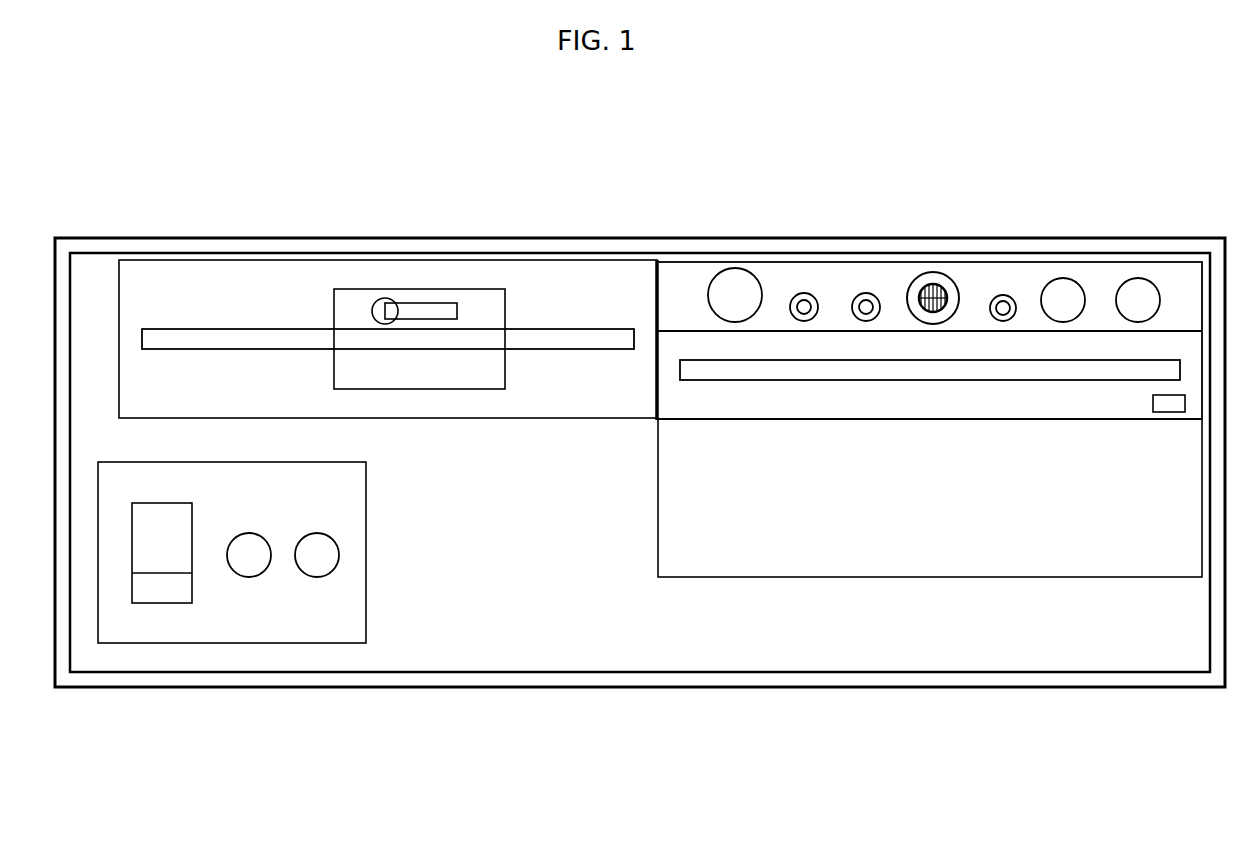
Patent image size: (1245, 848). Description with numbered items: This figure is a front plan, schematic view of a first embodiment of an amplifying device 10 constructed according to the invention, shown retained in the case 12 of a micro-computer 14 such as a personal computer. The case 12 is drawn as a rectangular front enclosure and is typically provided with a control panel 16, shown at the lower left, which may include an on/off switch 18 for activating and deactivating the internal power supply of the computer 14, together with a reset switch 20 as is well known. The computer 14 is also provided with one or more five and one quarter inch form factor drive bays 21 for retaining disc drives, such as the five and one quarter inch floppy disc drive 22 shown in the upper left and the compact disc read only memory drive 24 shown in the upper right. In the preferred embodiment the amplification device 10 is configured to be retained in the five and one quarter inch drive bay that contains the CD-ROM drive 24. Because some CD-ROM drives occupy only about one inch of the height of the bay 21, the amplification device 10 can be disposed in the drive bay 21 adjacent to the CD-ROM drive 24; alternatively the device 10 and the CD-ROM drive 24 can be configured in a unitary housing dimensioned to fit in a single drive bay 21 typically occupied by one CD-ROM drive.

The amplifying device 10 is at (848, 277).
The case 12 is at (487, 690).
The micro-computer 14 is at (635, 727).
The control panel 16 is at (289, 606).
The on/off switch 18 is at (167, 612).
The reset switch 20 is at (248, 583).
The drive bay 21 is at (695, 522).
The floppy disc drive 22 is at (455, 397).
The CD-ROM drive 24 is at (672, 385).